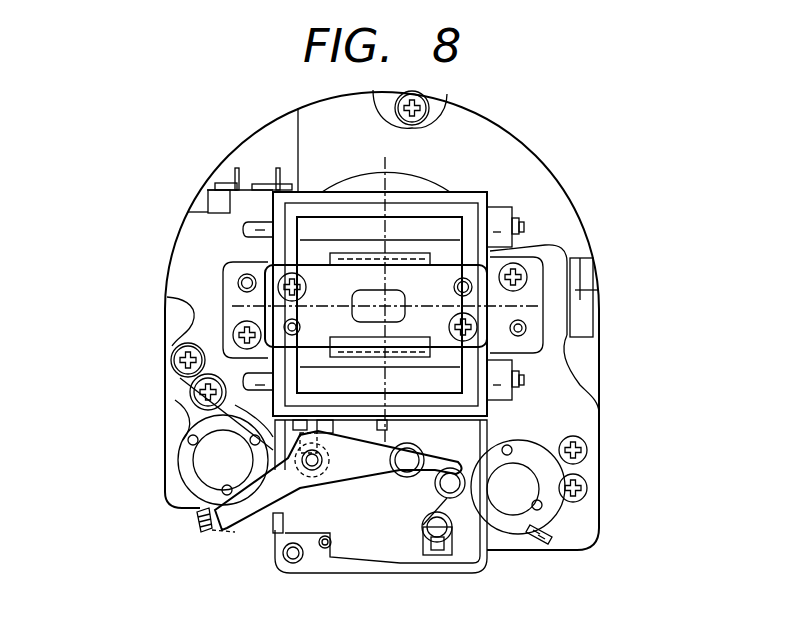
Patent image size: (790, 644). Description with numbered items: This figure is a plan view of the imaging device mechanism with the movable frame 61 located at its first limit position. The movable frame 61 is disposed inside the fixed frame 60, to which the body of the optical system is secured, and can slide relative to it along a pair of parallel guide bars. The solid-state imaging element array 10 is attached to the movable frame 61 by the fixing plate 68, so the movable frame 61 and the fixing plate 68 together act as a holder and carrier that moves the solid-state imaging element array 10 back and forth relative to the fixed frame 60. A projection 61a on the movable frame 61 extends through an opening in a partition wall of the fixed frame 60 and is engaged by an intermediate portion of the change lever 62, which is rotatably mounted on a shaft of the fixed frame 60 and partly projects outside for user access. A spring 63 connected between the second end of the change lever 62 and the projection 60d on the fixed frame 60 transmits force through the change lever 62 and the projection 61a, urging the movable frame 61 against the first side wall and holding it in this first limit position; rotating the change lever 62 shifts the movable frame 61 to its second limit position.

The solid-state imaging element array 10 is at (525, 228).
The fixed frame 60 is at (480, 197).
The movable frame 61 is at (428, 213).
The projection 61a is at (300, 448).
The change lever 62 is at (207, 533).
The spring 63 is at (427, 470).
The fixing plate 68 is at (480, 287).
The projection 60d is at (413, 528).